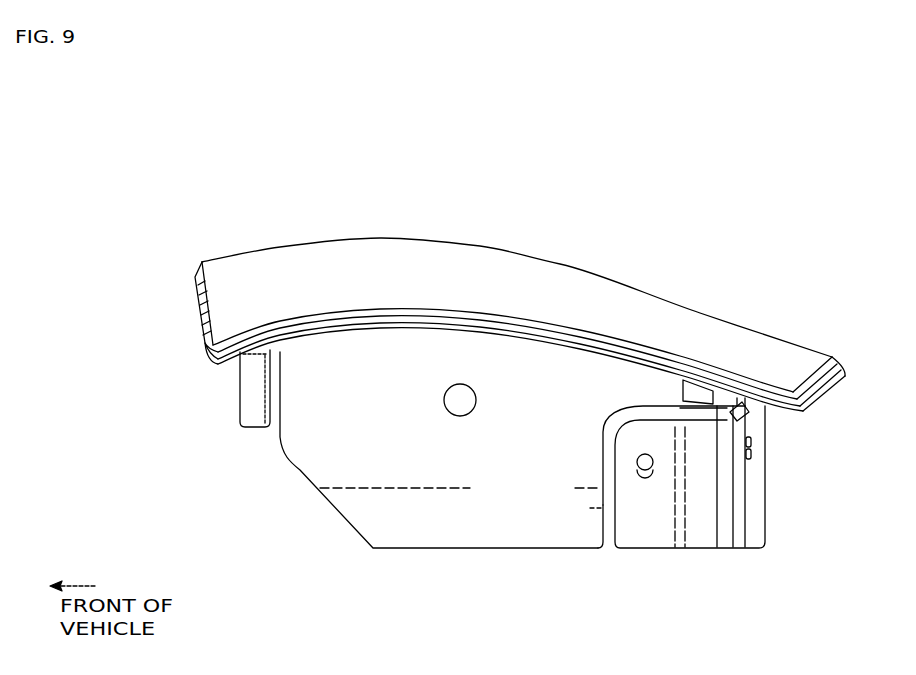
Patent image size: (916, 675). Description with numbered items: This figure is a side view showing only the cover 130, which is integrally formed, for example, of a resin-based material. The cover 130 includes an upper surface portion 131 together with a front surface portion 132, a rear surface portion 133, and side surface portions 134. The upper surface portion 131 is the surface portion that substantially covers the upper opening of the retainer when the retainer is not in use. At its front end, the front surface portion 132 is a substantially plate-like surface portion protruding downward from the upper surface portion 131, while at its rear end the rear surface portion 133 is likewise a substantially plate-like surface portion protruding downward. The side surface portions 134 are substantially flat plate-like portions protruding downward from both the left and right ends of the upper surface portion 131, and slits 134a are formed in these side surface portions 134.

The cover 130 is at (183, 222).
The upper surface portion 131 is at (542, 258).
The front surface portion 132 is at (243, 398).
The rear surface portion 133 is at (765, 470).
The side surface portion 134 is at (310, 473).
The slit 134a is at (607, 510).